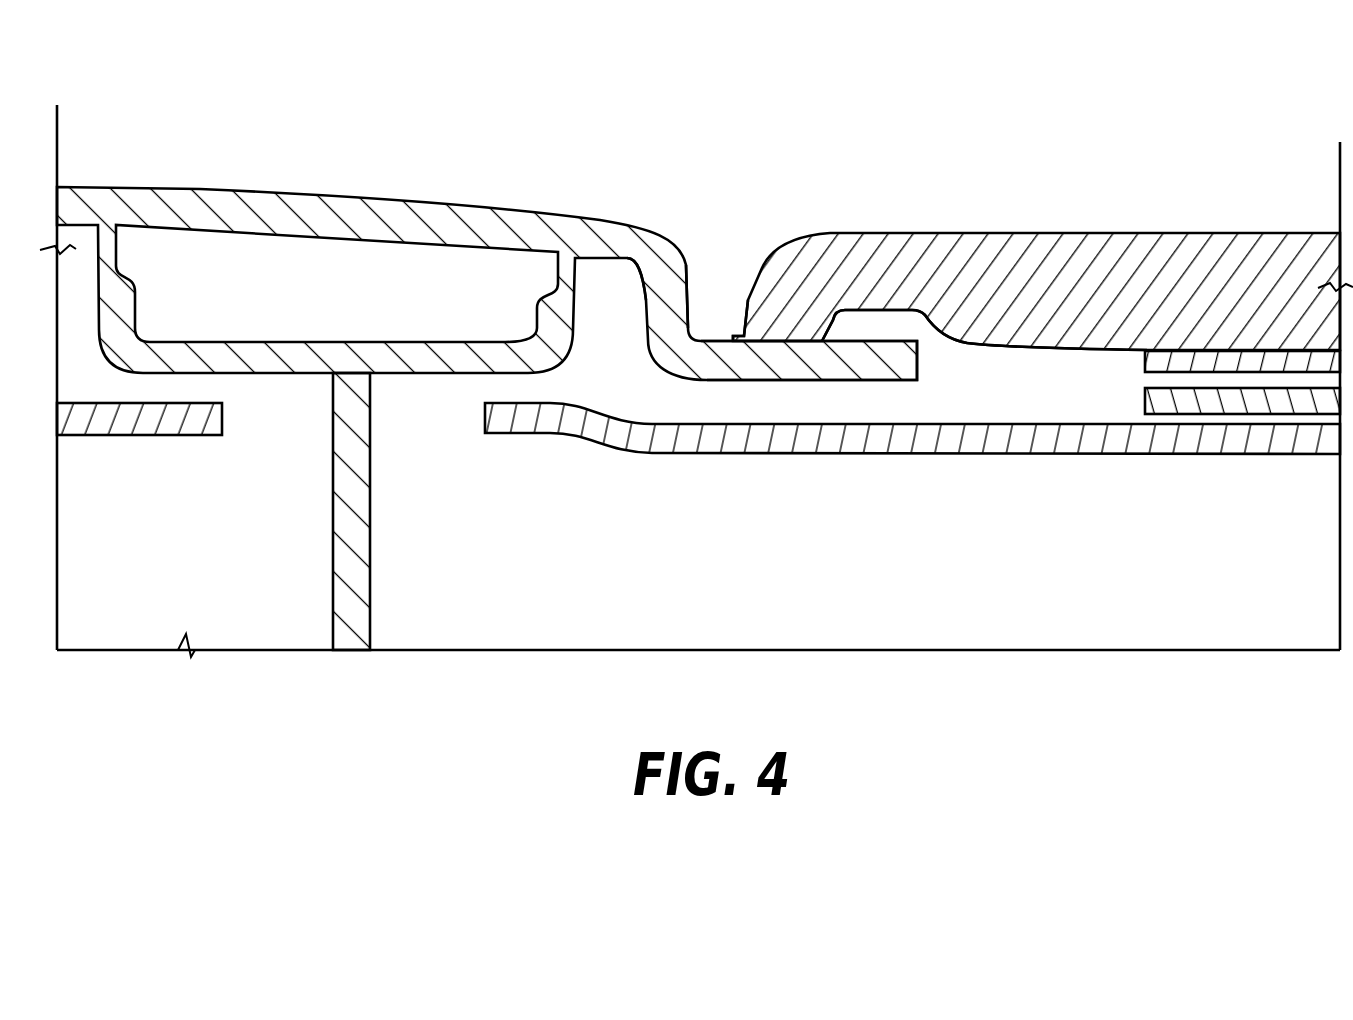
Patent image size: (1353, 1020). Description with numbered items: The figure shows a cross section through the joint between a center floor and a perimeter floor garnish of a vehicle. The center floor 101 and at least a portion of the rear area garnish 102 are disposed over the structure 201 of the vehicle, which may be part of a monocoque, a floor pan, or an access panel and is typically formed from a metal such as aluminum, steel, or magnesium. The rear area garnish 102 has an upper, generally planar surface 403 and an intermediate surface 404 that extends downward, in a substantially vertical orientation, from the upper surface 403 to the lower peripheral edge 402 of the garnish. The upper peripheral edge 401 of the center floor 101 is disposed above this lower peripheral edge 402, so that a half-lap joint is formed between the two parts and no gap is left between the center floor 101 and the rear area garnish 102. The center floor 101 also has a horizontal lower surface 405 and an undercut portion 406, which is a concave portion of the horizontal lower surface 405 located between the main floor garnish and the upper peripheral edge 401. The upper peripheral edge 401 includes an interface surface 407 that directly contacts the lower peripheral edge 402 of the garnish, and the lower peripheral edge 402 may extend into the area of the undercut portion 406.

The center floor 101 is at (1270, 245).
The rear area garnish 102 is at (110, 198).
The structure 201 is at (1088, 447).
The upper peripheral edge 401 is at (1014, 311).
The lower peripheral edge 402 is at (787, 372).
The upper surface 403 is at (487, 284).
The intermediate surface 404 is at (660, 303).
The horizontal lower surface 405 is at (1123, 388).
The undercut portion 406 is at (880, 328).
The interface surface 407 is at (763, 332).